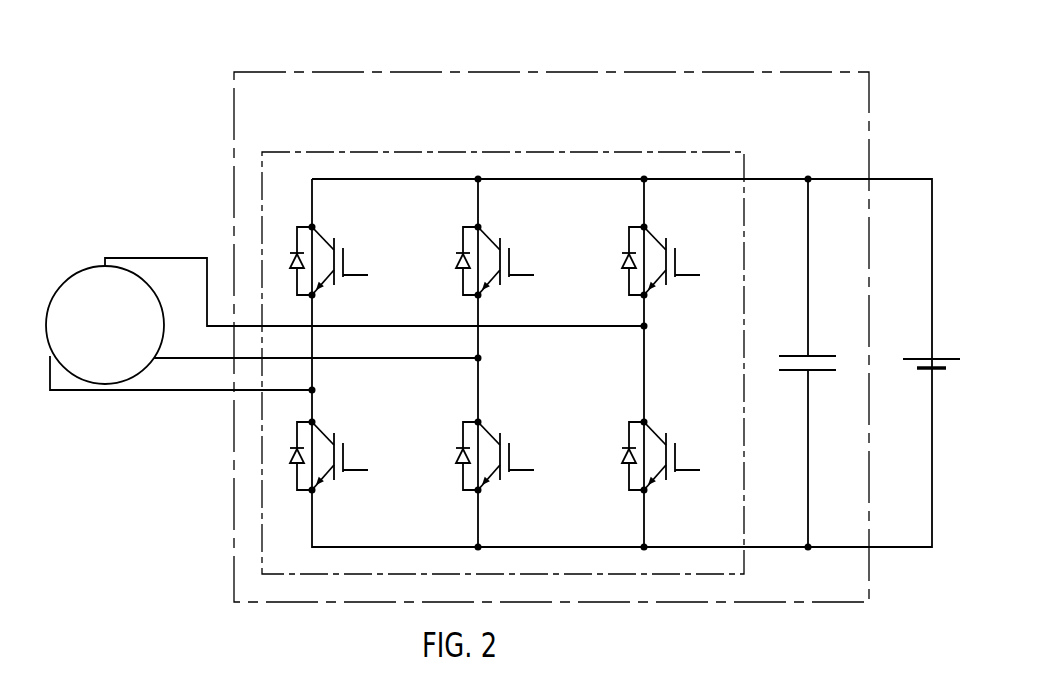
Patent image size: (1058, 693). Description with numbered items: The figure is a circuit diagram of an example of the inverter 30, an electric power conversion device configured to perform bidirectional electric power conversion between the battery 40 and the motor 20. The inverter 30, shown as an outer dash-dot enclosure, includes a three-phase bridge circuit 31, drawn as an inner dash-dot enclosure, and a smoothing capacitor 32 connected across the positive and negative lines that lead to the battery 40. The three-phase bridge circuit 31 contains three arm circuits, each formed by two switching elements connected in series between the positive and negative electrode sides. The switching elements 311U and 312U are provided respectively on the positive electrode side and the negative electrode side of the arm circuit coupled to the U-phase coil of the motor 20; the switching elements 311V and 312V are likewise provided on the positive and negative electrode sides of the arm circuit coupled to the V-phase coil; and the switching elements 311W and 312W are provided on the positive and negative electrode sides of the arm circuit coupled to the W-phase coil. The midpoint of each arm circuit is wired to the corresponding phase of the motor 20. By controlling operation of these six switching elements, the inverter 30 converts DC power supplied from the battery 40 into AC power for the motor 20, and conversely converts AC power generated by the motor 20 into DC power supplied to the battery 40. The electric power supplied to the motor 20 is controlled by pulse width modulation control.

The motor 20 is at (90, 264).
The inverter 30 is at (552, 72).
The three-phase bridge circuit 31 is at (502, 152).
The smoothing capacitor 32 is at (796, 354).
The battery 40 is at (923, 357).
The switching element 311W is at (345, 256).
The switching element 311V is at (511, 256).
The switching element 311U is at (677, 256).
The switching element 312W is at (345, 451).
The switching element 312V is at (511, 451).
The switching element 312U is at (677, 451).